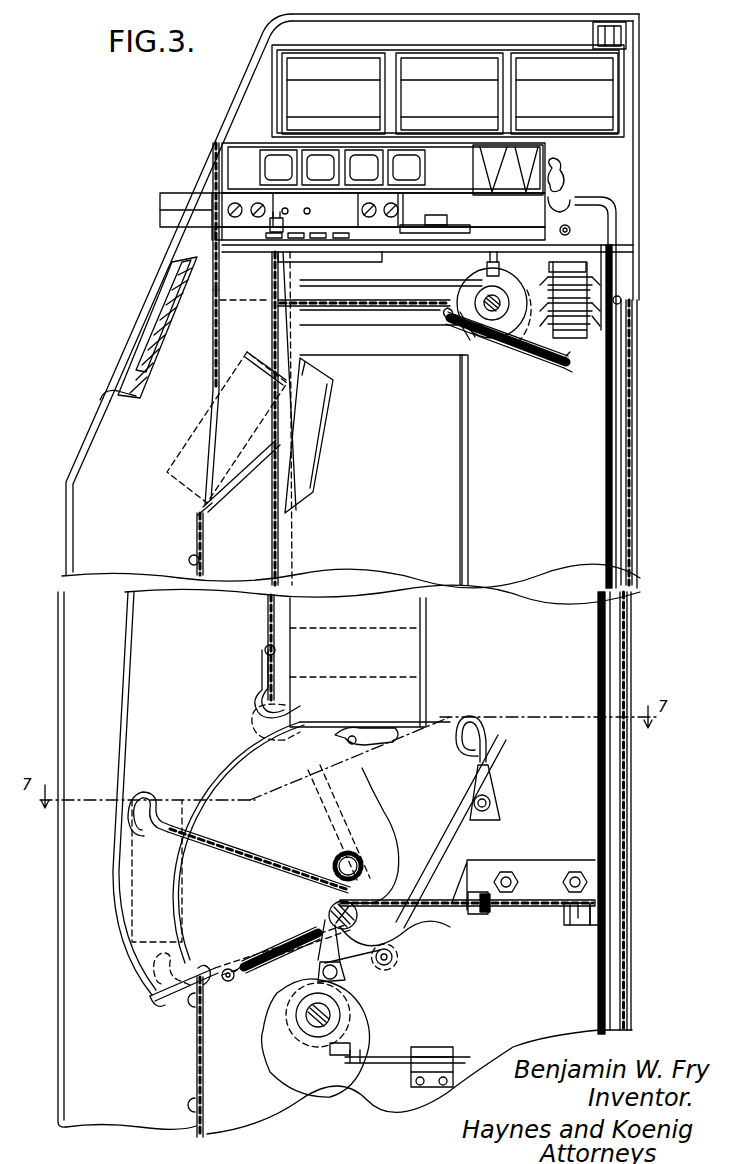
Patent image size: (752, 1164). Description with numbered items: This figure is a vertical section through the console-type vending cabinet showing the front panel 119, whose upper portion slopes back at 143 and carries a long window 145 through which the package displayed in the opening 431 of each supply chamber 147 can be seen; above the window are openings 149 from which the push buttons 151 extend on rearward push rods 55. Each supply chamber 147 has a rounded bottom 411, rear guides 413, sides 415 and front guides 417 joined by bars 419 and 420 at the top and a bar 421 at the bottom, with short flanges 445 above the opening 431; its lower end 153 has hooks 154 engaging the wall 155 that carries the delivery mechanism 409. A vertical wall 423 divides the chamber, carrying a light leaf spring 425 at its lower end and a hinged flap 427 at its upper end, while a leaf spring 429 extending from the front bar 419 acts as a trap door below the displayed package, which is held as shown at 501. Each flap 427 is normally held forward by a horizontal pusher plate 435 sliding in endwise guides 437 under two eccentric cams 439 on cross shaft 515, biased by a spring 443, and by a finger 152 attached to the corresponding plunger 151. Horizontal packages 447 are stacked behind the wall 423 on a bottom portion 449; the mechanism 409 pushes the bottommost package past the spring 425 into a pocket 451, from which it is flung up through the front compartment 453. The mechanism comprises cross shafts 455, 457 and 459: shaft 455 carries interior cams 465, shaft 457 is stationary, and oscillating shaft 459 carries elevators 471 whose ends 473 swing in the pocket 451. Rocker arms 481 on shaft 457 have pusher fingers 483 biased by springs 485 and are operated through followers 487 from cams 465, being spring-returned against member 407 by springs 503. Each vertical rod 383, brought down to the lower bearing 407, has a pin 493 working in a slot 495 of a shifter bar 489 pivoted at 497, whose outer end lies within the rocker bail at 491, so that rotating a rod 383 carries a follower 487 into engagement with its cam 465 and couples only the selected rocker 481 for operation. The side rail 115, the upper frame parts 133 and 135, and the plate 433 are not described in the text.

The push rod 55 is at (247, 200).
The side rail 115 is at (628, 797).
The front panel 119 is at (58, 975).
The window panel 133 is at (272, 103).
The coil 135 is at (253, 160).
The sloping portion 143 is at (165, 272).
The window 145 is at (140, 352).
The supply chamber 147 is at (476, 541).
The opening 149 is at (210, 193).
The push button 151 is at (160, 203).
The finger 152 is at (378, 258).
The lower end 153 is at (143, 988).
The hook 154 is at (206, 993).
The wall 155 is at (197, 1062).
The rod 383 is at (613, 462).
The lower bearing 407 is at (468, 870).
The discharge operating mechanism 409 is at (487, 986).
The rounded bottom 411 is at (227, 770).
The rear guide 413 is at (468, 440).
The side 415 is at (385, 360).
The front guide 417 is at (122, 695).
The bar 419 is at (197, 530).
The bar 420 is at (213, 247).
The bar 421 is at (164, 1004).
The vertical wall 423 is at (270, 557).
The leaf spring 425 is at (262, 681).
The flap 427 is at (272, 340).
The leaf spring 429 is at (238, 488).
The opening 431 is at (210, 428).
The plate 433 is at (302, 430).
The pusher plate 435 is at (330, 305).
The endwise guide 437 is at (426, 289).
The eccentric cam 439 is at (467, 340).
The biasing spring 443 is at (507, 362).
The flange 445 is at (213, 357).
The package supply 447 is at (421, 679).
The bottom portion 449 is at (366, 738).
The pocket 451 is at (112, 876).
The front compartment 453 is at (152, 643).
The cross shaft 455 is at (317, 1020).
The cross shaft 457 is at (320, 935).
The cross shaft 459 is at (338, 862).
The interior cam 465 is at (288, 1068).
The elevator 471 is at (217, 847).
The elevator end 473 is at (153, 804).
The rocker arm 481 is at (336, 805).
The pusher finger 483 is at (245, 727).
The spring 485 is at (472, 797).
The follower 487 is at (398, 957).
The shifter bar 489 is at (458, 908).
The bail bottom portion 491 is at (380, 885).
The pin 493 is at (575, 927).
The slot 495 is at (572, 914).
The pivot 497 is at (486, 910).
The held package position 501 is at (247, 409).
The spring 503 is at (245, 975).
The cross shaft 515 is at (495, 312).